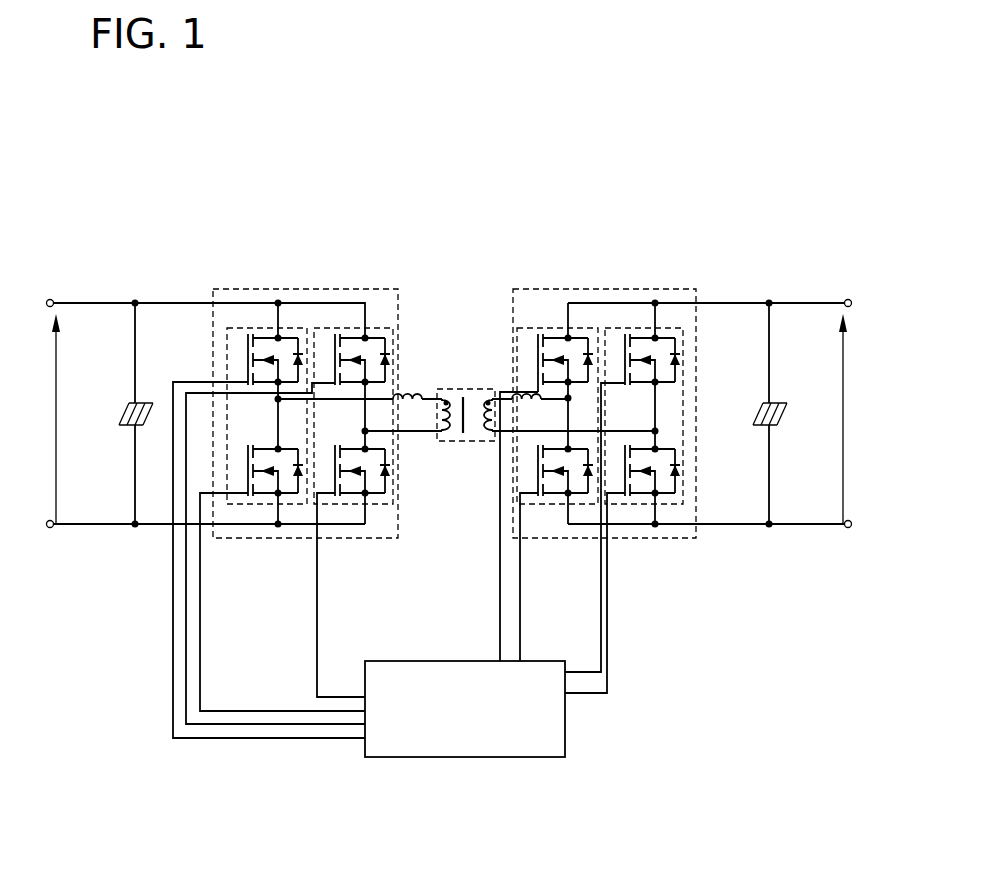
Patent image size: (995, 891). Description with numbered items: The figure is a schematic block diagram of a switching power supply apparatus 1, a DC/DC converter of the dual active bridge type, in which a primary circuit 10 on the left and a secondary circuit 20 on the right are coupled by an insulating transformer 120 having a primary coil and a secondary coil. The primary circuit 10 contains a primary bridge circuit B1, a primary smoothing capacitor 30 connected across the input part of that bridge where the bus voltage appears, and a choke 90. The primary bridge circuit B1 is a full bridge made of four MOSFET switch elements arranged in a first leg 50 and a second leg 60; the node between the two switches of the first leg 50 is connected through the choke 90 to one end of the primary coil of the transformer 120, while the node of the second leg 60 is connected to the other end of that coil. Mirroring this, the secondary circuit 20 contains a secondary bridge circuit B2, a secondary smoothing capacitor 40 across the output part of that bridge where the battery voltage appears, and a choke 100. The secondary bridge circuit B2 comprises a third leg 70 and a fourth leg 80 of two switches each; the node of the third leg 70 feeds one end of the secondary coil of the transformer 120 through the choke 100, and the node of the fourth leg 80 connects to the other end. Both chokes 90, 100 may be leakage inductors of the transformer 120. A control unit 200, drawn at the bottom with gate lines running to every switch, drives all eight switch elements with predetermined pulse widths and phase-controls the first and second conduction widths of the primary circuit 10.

The switching power supply apparatus 1 is at (589, 132).
The primary circuit 10 is at (194, 226).
The secondary circuit 20 is at (718, 226).
The primary smoothing capacitor 30 is at (130, 402).
The secondary smoothing capacitor 40 is at (778, 402).
The first leg 50 is at (250, 504).
The second leg 60 is at (357, 504).
The third leg 70 is at (545, 504).
The fourth leg 80 is at (635, 504).
The choke (inductor) 90 is at (405, 393).
The choke (inductor) 100 is at (521, 393).
The insulating transformer 120 is at (470, 441).
The control unit 200 is at (484, 718).
The primary bridge circuit B1 is at (258, 289).
The secondary bridge circuit B2 is at (587, 289).